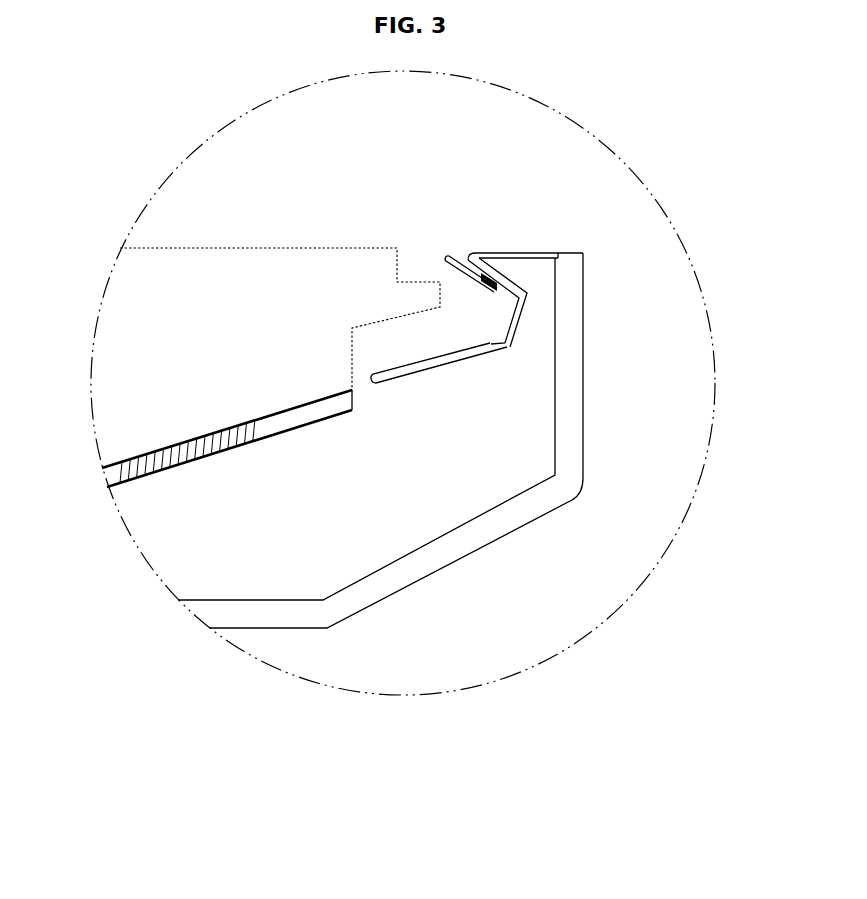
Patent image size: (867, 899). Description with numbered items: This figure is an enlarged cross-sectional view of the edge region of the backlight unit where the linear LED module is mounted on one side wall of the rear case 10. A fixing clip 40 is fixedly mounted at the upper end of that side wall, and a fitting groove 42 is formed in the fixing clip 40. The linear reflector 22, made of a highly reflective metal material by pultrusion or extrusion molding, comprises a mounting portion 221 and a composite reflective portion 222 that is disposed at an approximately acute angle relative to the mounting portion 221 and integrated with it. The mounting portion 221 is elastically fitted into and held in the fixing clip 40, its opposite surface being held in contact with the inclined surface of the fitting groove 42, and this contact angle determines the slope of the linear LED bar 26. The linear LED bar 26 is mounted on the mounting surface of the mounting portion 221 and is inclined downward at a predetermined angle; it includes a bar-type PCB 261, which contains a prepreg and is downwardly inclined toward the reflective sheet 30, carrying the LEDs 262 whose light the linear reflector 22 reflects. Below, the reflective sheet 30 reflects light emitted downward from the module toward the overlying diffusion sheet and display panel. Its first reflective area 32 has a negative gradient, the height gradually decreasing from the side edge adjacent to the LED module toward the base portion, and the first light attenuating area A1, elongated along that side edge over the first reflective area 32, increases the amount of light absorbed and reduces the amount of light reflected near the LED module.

The rear case 10 is at (473, 553).
The linear reflector 22 is at (446, 308).
The mounting portion 221 is at (449, 256).
The composite reflective portion 222 is at (392, 373).
The linear LED bar 26 is at (465, 275).
The bar-type PCB 261 is at (486, 282).
The LEDs 262 is at (490, 286).
The reflective sheet 30 is at (123, 365).
The first reflective area 32 is at (282, 412).
The fixing clip 40 is at (615, 249).
The fitting groove 42 is at (518, 302).
The first light attenuating area A1 is at (213, 493).